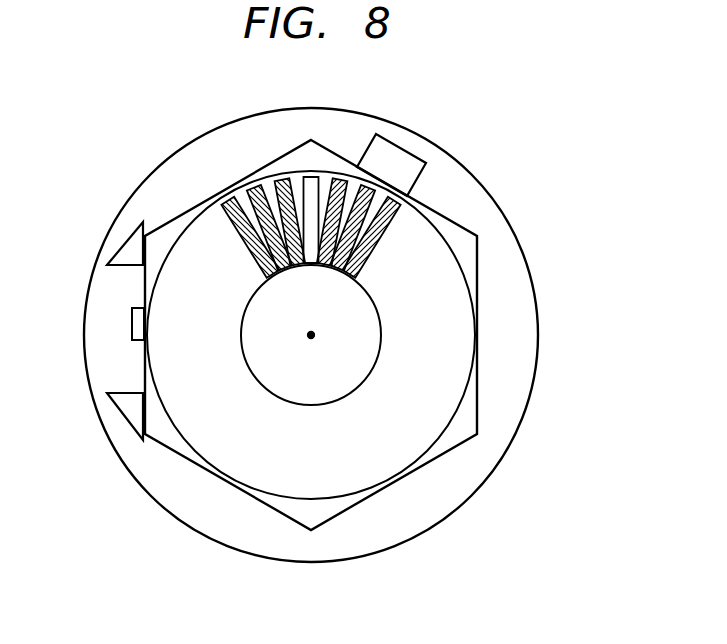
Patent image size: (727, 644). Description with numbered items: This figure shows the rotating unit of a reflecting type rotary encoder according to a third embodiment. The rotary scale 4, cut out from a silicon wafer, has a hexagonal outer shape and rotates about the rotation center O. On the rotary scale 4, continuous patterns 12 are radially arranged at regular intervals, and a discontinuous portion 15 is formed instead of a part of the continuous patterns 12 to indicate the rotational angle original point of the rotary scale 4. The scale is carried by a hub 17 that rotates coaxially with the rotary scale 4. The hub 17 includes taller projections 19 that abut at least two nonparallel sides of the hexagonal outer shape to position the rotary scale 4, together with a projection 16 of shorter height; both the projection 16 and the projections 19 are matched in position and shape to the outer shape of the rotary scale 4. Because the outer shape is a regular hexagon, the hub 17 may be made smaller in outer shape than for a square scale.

The rotary scale 4 is at (323, 510).
The continuous patterns 12 is at (395, 223).
The discontinuous portion 15 is at (308, 174).
The projection having shorter height 16 is at (132, 311).
The hub 17 is at (530, 275).
The projections 19 is at (405, 157).
The rotation center O is at (311, 338).